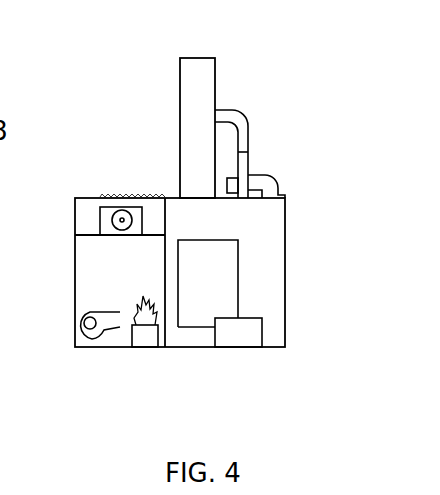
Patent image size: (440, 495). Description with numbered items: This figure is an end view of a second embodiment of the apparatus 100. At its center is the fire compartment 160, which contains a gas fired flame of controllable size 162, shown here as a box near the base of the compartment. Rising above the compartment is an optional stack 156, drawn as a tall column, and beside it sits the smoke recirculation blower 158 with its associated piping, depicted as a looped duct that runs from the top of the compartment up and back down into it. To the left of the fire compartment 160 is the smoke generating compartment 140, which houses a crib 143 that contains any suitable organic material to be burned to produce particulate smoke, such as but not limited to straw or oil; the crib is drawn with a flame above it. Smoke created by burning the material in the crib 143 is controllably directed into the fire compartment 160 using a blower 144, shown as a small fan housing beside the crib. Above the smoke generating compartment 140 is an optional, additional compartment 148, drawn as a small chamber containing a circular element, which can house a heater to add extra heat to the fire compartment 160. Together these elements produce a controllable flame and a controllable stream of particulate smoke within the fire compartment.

The heating system 100 is at (130, 118).
The smoke generating compartment 140 is at (97, 273).
The crib 143 is at (139, 336).
The blower 144 is at (90, 329).
The additional compartment 148 is at (98, 198).
The stack 156 is at (205, 79).
The smoke recirculation blower 158 is at (273, 170).
The fire compartment 160 is at (266, 257).
The gas fired flame of controllable size 162 is at (249, 335).